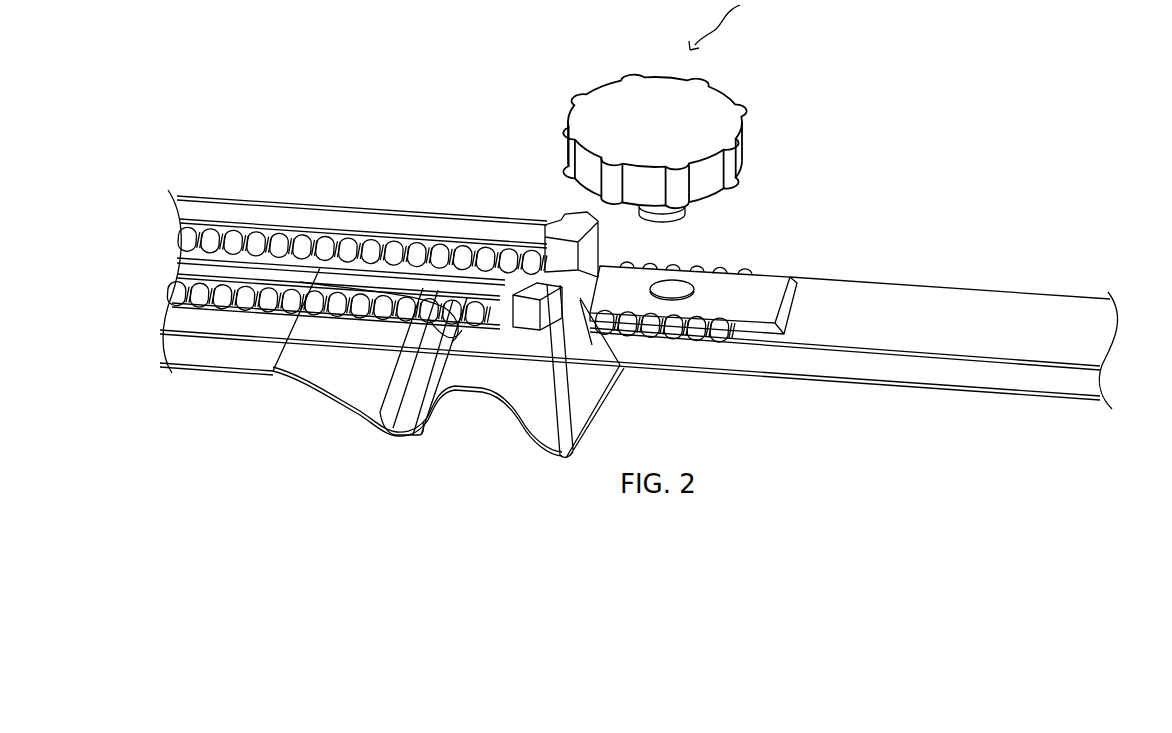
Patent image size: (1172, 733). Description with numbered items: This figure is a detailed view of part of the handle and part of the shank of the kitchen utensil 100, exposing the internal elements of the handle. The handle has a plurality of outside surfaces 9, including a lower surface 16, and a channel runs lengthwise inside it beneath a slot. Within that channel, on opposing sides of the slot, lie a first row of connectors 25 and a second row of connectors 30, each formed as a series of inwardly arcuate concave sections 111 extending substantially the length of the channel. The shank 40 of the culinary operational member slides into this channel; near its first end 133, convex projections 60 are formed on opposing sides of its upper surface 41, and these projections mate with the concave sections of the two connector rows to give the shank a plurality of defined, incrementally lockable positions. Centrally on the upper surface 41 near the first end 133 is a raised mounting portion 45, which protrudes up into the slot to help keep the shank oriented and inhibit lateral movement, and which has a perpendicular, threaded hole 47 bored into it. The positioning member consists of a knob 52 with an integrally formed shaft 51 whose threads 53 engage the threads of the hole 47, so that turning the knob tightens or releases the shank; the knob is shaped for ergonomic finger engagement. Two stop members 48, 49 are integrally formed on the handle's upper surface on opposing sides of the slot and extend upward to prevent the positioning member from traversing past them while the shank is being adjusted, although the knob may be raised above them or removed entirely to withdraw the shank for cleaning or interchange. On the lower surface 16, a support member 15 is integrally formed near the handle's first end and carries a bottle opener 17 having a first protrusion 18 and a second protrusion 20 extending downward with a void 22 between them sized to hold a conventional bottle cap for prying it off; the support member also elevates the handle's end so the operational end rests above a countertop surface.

The kitchen utensil 100 is at (1017, 123).
The outside surfaces 9 is at (194, 180).
The first row of connectors 25 is at (303, 247).
The concave sections 111 is at (224, 227).
The second row of connectors 30 is at (195, 288).
The lower surface 16 is at (219, 378).
The support member 15 is at (572, 494).
The bottle opener 17 is at (416, 495).
The second protrusion 20 is at (380, 430).
The void 22 is at (476, 428).
The first protrusion 18 is at (542, 425).
The first end 133 is at (592, 375).
The stop member 48 is at (525, 284).
The stop member 49 is at (552, 222).
The knob 52 is at (700, 103).
The shaft 51 is at (713, 210).
The threads 53 is at (745, 215).
The shank 40 is at (1017, 292).
The upper surface 41 is at (846, 292).
The mounting portion 45 is at (758, 290).
The hole 47 is at (683, 287).
The projections 60 is at (677, 262).